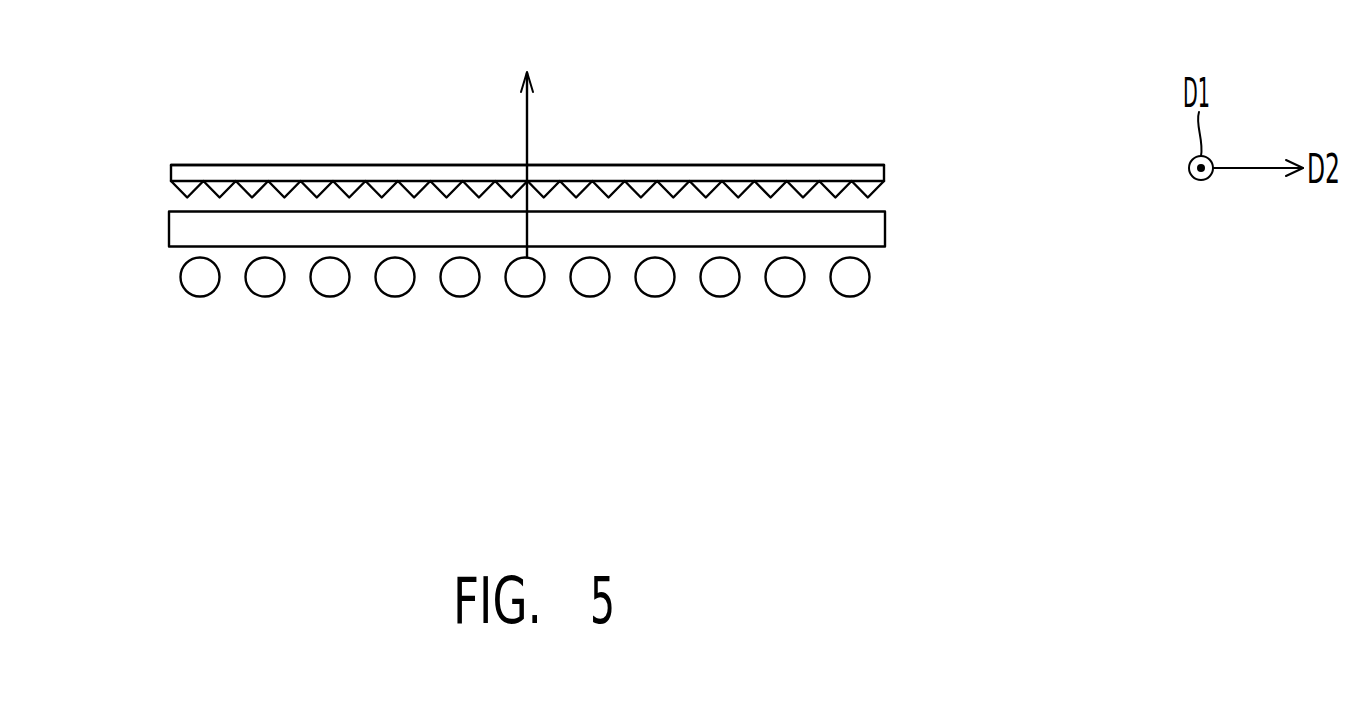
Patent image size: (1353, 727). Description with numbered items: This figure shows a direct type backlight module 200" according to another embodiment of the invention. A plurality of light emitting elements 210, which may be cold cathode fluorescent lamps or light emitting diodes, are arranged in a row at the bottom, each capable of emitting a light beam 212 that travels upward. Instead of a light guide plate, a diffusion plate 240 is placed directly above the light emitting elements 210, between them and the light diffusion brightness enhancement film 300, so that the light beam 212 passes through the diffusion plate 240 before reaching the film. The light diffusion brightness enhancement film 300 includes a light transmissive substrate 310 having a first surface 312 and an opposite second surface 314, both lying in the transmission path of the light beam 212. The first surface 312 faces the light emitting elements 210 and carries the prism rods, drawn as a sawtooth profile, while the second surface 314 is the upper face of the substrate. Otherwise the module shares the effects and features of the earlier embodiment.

The backlight module 200 is at (1078, 400).
The light emitting element 210 is at (788, 280).
The light beam 212 is at (526, 127).
The diffusion plate 240 is at (865, 232).
The light diffusion brightness enhancement film 300 is at (468, 208).
The light transmissive substrate 310 is at (596, 167).
The first surface 312 is at (287, 184).
The second surface 314 is at (271, 163).